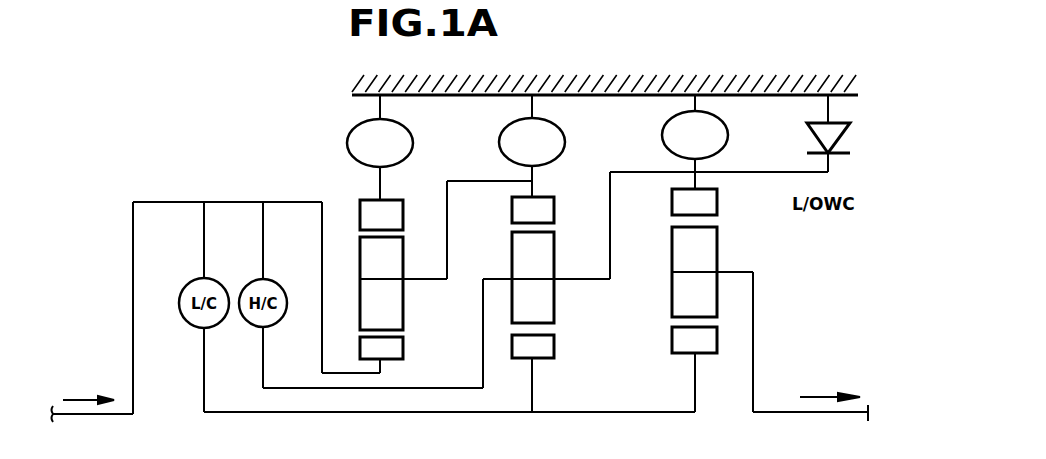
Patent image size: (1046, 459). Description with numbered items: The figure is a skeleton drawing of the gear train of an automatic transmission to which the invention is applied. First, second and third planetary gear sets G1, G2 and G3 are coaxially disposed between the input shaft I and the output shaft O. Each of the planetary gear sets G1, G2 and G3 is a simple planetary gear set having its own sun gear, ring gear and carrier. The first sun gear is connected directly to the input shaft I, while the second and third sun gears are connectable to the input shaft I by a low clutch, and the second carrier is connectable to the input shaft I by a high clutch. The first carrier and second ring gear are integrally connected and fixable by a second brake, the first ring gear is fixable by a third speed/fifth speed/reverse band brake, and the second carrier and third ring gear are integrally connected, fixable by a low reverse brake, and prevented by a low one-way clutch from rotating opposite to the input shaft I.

The first planetary gear set G1 is at (350, 224).
The second planetary gear set G2 is at (566, 319).
The third planetary gear set G3 is at (740, 254).
The input shaft I is at (78, 416).
The output shaft O is at (839, 416).